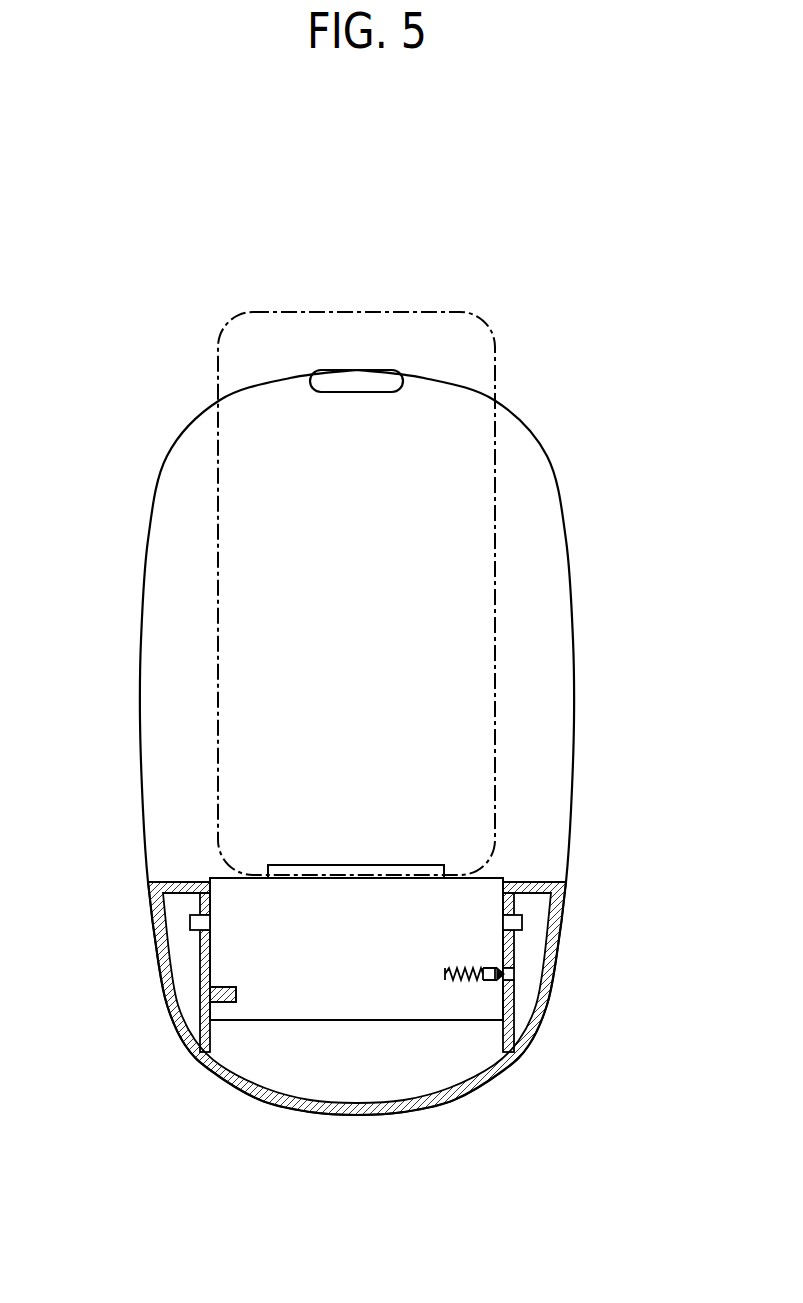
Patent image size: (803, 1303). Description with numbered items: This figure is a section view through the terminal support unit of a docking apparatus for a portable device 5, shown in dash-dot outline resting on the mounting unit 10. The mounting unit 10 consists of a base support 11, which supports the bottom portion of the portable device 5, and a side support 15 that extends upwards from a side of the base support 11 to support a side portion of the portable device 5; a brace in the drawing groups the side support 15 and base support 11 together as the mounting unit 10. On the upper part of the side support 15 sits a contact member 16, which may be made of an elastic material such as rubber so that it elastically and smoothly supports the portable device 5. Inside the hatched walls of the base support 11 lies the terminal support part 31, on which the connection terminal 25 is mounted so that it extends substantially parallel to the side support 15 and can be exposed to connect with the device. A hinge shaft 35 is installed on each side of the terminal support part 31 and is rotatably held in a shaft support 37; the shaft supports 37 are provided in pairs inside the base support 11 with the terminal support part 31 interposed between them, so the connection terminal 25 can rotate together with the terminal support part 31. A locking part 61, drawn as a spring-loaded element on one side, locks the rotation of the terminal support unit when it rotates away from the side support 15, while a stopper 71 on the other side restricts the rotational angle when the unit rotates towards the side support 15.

The portable device 5 is at (267, 325).
The mounting unit 10 is at (658, 692).
The base support 11 is at (535, 885).
The side support 15 is at (542, 696).
The contact member 16 is at (360, 377).
The connection terminal 25 is at (262, 877).
The terminal support part 31 is at (345, 1012).
The hinge shaft 35 is at (190, 923).
The shaft support 37 is at (200, 978).
The locking part 61 is at (467, 985).
The stopper 71 is at (230, 1000).